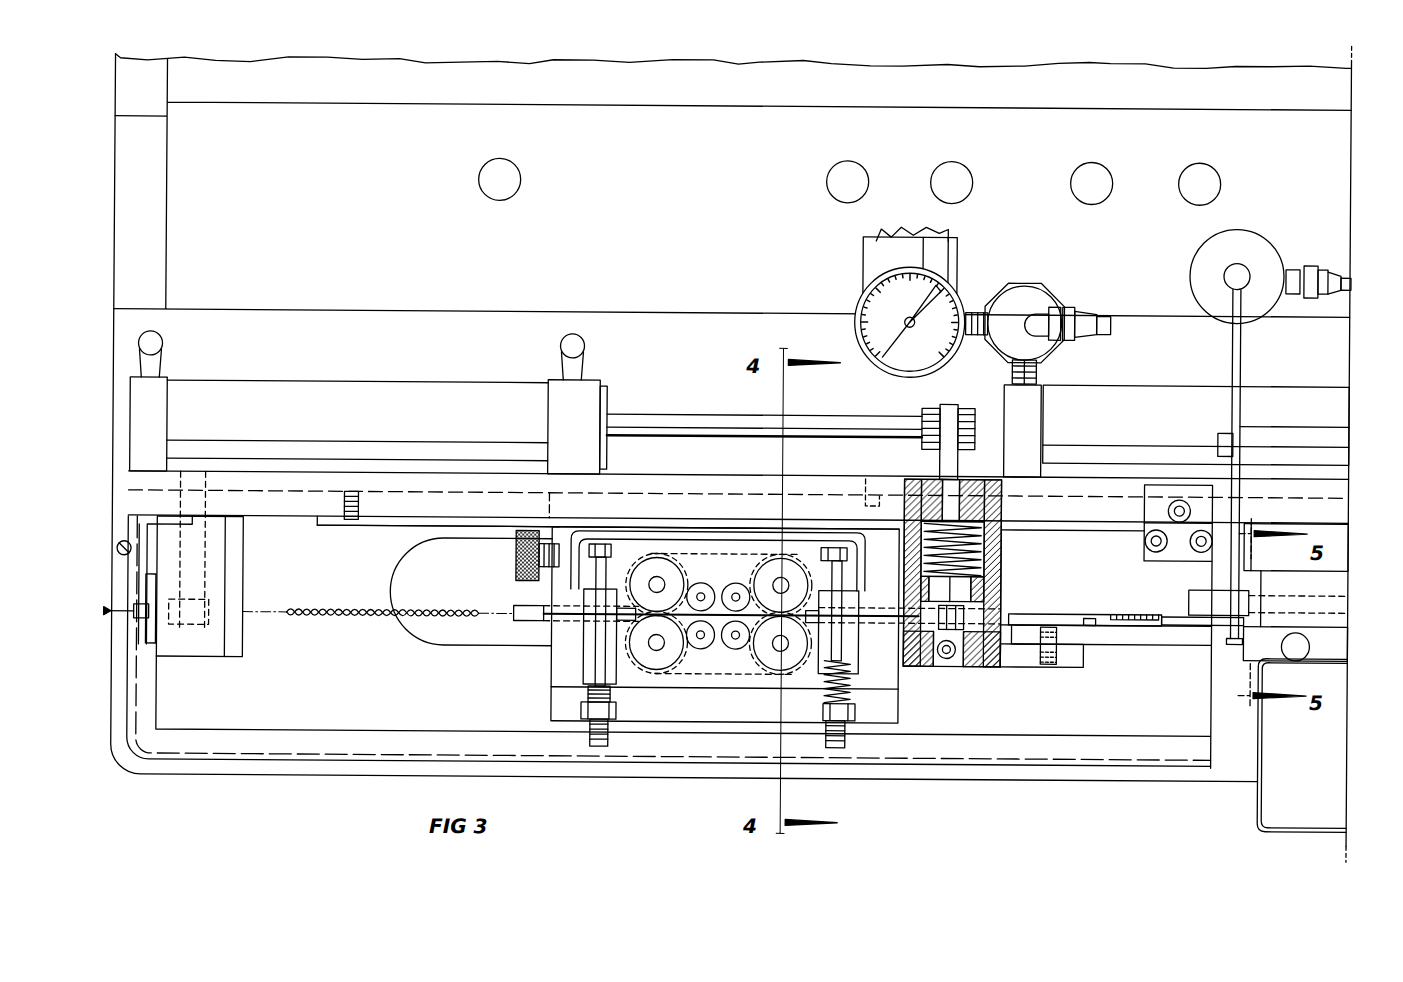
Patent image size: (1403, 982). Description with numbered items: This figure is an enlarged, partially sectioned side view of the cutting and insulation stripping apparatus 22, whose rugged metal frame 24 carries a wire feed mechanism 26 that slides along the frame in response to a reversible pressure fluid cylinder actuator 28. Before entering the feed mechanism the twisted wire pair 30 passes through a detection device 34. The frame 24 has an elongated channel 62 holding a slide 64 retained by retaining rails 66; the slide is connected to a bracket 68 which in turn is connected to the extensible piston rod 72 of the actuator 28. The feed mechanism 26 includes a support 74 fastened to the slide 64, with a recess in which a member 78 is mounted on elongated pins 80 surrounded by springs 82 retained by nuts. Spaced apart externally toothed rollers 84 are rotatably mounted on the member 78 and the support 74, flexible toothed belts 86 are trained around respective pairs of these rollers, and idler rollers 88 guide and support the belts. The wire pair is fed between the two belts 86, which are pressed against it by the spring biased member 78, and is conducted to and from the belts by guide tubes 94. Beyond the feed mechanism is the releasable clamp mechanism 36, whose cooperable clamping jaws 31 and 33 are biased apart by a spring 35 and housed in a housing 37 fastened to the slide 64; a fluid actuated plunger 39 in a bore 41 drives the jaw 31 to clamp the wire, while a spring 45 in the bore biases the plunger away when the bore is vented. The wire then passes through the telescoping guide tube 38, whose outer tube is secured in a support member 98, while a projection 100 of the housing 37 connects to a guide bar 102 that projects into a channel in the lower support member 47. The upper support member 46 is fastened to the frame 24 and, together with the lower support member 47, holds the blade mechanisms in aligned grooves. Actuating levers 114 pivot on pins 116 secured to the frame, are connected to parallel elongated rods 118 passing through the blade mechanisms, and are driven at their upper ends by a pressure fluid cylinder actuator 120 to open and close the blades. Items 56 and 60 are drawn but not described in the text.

The cutting and insulation stripping apparatus 22 is at (372, 786).
The frame 24 is at (338, 485).
The wire feed mechanism 26 is at (658, 734).
The pressure fluid cylinder type actuator 28 is at (427, 387).
The twisted wire pair 30 is at (337, 624).
The clamping jaw 31 is at (975, 588).
The clamping jaw 33 is at (960, 664).
The detection device 34 is at (205, 660).
The spring 35 is at (907, 626).
The releasable clamp mechanism 36 is at (1006, 572).
The housing 37 is at (990, 560).
The telescoping guide tube 38 is at (1143, 612).
The fluid actuated plunger 39 is at (990, 515).
The bore 41 is at (990, 543).
The spring 45 is at (962, 478).
The upper support member 46 is at (1350, 548).
The lower support member 47 is at (1350, 638).
The air cylinder 56 is at (1168, 386).
The side wall 60 is at (1350, 216).
The elongated channel 62 is at (869, 494).
The slide 64 is at (935, 477).
The retaining rails 66 is at (398, 523).
The bracket 68 is at (948, 410).
The piston rod 72 is at (718, 425).
The support 74 is at (875, 672).
The member 78 is at (703, 552).
The pins 80 is at (596, 648).
The springs 82 is at (583, 712).
The externally toothed rollers 84 is at (655, 560).
The flexible toothed belts 86 is at (742, 585).
The idler rollers 88 is at (737, 652).
The guide tubes 94 is at (520, 607).
The support member 98 is at (1267, 577).
The projection 100 is at (1062, 662).
The guide bar 102 is at (1162, 627).
The actuating levers 114 is at (1240, 348).
The pins 116 is at (1218, 440).
The elongated rods 118 is at (1350, 593).
The pressure fluid cylinder actuator 120 is at (1246, 238).